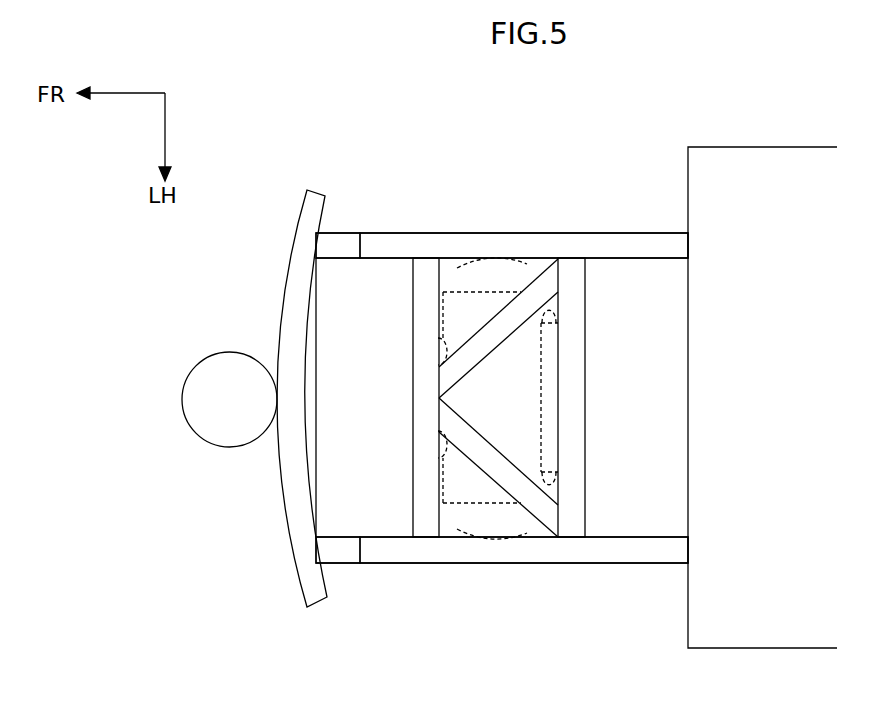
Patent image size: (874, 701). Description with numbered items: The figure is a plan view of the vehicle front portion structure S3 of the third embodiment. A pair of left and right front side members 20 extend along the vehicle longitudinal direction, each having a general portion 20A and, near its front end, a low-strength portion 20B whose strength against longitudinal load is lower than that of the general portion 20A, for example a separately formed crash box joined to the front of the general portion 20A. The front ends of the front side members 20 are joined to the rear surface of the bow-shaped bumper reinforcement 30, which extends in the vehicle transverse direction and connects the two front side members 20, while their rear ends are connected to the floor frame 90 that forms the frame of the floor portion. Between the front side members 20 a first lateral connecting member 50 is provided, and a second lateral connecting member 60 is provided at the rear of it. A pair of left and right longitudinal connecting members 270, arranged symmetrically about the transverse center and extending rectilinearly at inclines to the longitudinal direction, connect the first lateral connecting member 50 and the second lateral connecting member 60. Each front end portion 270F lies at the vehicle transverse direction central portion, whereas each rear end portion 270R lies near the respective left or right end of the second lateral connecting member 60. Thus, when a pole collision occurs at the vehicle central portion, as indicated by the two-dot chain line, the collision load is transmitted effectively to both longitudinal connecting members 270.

The front side member 20 is at (483, 233).
The general portion 20A is at (549, 241).
The low-strength portion 20B is at (342, 242).
The bumper reinforcement 30 is at (279, 328).
The first lateral connecting member 50 is at (413, 302).
The second lateral connecting member 60 is at (585, 394).
The floor frame 90 is at (779, 403).
The longitudinal connecting member 270 is at (476, 331).
The front end portion 270F is at (440, 344).
The rear end portion 270R is at (558, 318).
The vehicle front portion structure S3 is at (599, 163).